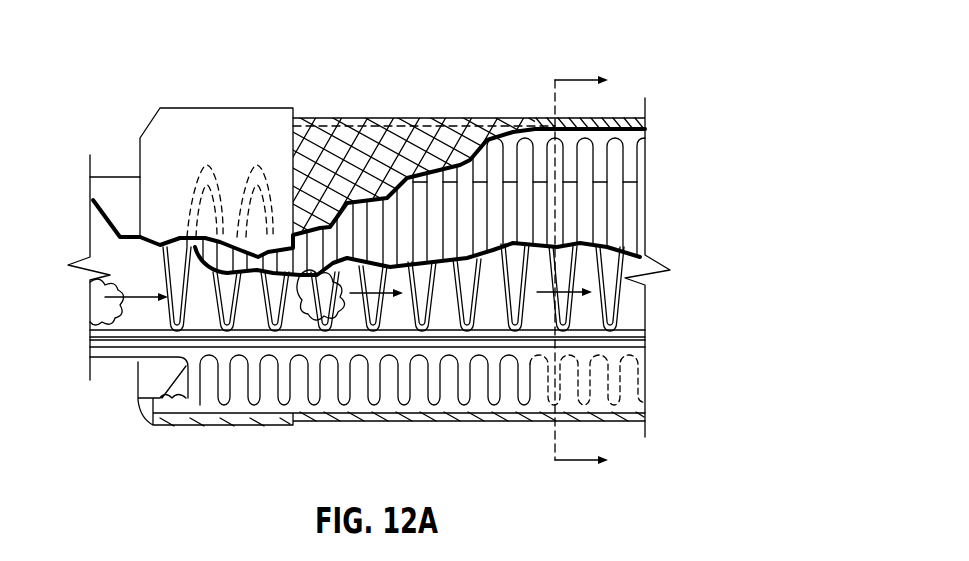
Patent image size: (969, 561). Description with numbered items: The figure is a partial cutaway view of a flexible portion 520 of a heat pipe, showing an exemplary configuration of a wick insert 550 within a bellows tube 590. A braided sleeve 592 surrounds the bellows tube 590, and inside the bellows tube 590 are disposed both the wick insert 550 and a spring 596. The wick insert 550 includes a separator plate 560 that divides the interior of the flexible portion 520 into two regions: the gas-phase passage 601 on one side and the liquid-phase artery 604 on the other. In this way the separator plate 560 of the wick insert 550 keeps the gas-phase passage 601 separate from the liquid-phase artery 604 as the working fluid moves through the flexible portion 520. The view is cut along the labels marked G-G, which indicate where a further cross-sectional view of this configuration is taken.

The flexible portion 520 is at (270, 38).
The braided sleeve 592 is at (418, 135).
The bellows tube 590 is at (528, 140).
The gas-phase passage 601 is at (112, 246).
The spring 596 is at (622, 273).
The wick insert 550 is at (632, 322).
The separator plate 560 is at (643, 337).
The liquid-phase artery 604 is at (640, 372).